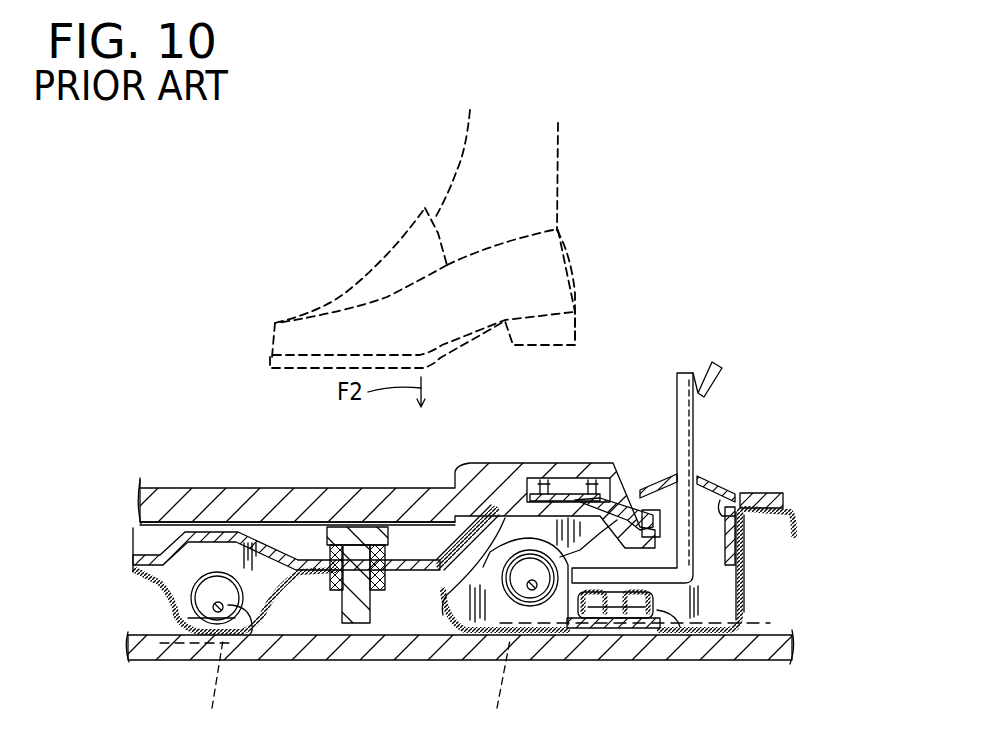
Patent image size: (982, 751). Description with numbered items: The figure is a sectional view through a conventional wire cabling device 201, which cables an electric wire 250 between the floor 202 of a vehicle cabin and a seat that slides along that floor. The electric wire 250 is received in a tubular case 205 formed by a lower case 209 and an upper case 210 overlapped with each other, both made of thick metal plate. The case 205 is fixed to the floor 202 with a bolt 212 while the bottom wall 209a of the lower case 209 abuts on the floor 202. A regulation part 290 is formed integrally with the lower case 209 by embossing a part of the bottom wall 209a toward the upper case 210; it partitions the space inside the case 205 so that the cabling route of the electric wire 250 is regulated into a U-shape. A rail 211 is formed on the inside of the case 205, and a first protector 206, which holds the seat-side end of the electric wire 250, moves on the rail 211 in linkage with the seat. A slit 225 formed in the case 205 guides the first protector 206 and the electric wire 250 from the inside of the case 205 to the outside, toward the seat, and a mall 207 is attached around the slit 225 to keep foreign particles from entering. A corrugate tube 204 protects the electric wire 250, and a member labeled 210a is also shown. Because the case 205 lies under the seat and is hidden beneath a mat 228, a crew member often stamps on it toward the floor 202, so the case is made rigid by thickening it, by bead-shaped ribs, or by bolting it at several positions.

The wire cabling device 201 is at (210, 417).
The mat 228 is at (175, 500).
The regulation part 290 is at (490, 495).
The upper rail bracket 210a is at (237, 545).
The bolt 212 is at (340, 603).
The corrugate tube 204 is at (165, 602).
The electric wire 250 is at (248, 628).
The floor 202 is at (185, 642).
The bottom wall 209a is at (346, 689).
The case 205 is at (598, 670).
The upper case 210 is at (583, 627).
The lower case 209 is at (600, 633).
The first protector 206 is at (697, 437).
The rail 211 is at (667, 610).
The mall 207 is at (723, 487).
The slit 225 is at (750, 577).